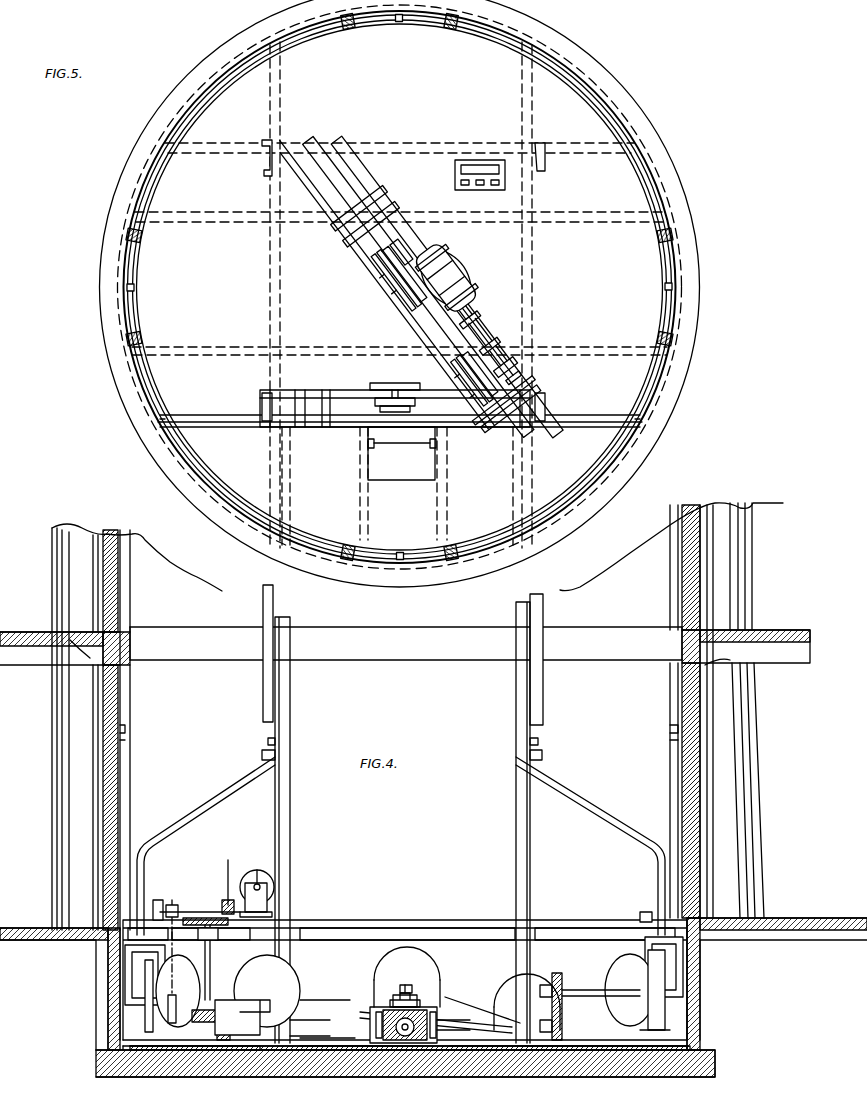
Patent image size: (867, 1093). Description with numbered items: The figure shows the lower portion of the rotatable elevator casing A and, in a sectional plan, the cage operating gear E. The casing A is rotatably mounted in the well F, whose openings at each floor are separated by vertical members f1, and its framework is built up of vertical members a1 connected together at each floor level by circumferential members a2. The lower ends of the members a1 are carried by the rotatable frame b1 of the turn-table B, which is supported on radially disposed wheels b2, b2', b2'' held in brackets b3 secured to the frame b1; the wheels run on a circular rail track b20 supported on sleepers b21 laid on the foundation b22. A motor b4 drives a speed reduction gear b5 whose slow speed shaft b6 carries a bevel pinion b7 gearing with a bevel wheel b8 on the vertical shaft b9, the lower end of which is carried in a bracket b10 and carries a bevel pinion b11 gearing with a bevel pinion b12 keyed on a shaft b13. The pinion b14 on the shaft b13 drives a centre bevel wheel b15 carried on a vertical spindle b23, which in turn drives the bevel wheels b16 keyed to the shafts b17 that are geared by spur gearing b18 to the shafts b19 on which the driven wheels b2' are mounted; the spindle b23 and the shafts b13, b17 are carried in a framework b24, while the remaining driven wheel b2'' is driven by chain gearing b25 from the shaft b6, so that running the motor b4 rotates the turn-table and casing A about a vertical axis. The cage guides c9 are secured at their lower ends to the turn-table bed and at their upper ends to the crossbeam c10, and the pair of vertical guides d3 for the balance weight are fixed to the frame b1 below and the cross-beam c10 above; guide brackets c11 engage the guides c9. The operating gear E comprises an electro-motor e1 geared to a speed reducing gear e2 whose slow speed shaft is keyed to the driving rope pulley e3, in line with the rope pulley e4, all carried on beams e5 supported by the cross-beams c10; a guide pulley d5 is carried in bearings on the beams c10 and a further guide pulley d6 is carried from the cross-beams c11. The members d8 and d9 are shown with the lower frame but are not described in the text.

In FIG. 5, the casing A is at (640, 118).
In FIG. 5, the cage operating gear E is at (457, 283).
In FIG. 4, the turn-table B is at (440, 1010).
In FIG. 4, the well F is at (120, 1025).
In FIG. 4, the vertical member a1 is at (128, 593).
In FIG. 4, the circumferential member a2 is at (128, 650).
In FIG. 5, the cage guide c9 is at (262, 162).
In FIG. 4, the cage guide c9 is at (263, 605).
In FIG. 5, the crossbeam c10 is at (420, 143).
In FIG. 5, the guide bracket c11 is at (265, 300).
In FIG. 4, the vertical guide d3 is at (290, 735).
In FIG. 5, the guide pulley d5 is at (392, 390).
In FIG. 5, the guide pulley d6 is at (325, 398).
In FIG. 5, the lower frame d8 is at (430, 466).
In FIG. 5, the lower frame bar d9 is at (400, 445).
In FIG. 5, the electro-motor e1 is at (446, 278).
In FIG. 5, the speed reducing gear e2 is at (471, 351).
In FIG. 5, the driving rope pulley e3 is at (480, 427).
In FIG. 5, the rope pulley e4 is at (401, 275).
In FIG. 5, the beam e5 is at (419, 286).
In FIG. 4, the vertical member of the well f1 is at (57, 718).
In FIG. 4, the turn-table frame b1 is at (158, 910).
In FIG. 4, the wheel b2 is at (405, 995).
In FIG. 4, the driven wheel b2' is at (559, 976).
In FIG. 4, the driven wheel b2'' is at (122, 1011).
In FIG. 4, the bracket b3 is at (130, 970).
In FIG. 4, the motor b4 is at (268, 887).
In FIG. 4, the speed reduction gear b5 is at (262, 886).
In FIG. 4, the slow speed shaft b6 is at (200, 912).
In FIG. 4, the bevel pinion b7 is at (228, 860).
In FIG. 4, the bevel wheel b8 is at (172, 905).
In FIG. 4, the vertical shaft b9 is at (210, 985).
In FIG. 4, the bracket b10 is at (258, 1000).
In FIG. 4, the bevel pinion b11 is at (198, 1005).
In FIG. 4, the bevel pinion b12 is at (230, 1020).
In FIG. 4, the shaft b13 is at (318, 1018).
In FIG. 4, the pinion b14 is at (393, 1000).
In FIG. 4, the centre bevel wheel b15 is at (410, 990).
In FIG. 4, the bevel wheel b16 is at (440, 1025).
In FIG. 4, the shaft b17 is at (520, 975).
In FIG. 4, the spur gearing b18 is at (562, 1010).
In FIG. 4, the shaft b19 is at (648, 1010).
In FIG. 4, the circular rail track b20 is at (140, 1043).
In FIG. 4, the sleeper b21 is at (130, 1050).
In FIG. 4, the foundation b22 is at (480, 1008).
In FIG. 4, the vertical spindle b23 is at (406, 985).
In FIG. 4, the framework b24 is at (355, 1013).
In FIG. 4, the chain gearing b25 is at (148, 975).